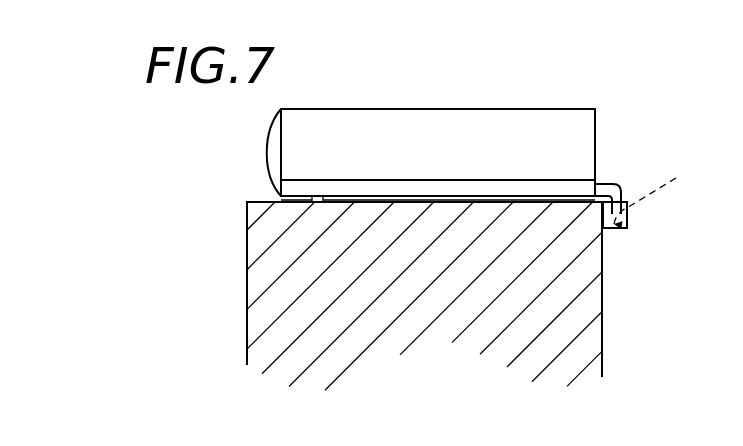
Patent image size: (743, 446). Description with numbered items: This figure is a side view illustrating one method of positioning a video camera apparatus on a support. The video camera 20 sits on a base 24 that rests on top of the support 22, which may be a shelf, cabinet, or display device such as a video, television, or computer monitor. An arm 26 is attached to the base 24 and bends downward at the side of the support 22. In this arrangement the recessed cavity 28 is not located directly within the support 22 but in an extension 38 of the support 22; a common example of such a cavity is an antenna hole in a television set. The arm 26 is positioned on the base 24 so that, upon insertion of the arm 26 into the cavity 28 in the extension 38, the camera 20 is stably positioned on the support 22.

The video camera 20 is at (500, 109).
The support 22 is at (247, 262).
The base 24 is at (278, 194).
The arm 26 is at (612, 184).
The recessed cavity 28 is at (662, 194).
The extension 38 is at (627, 225).